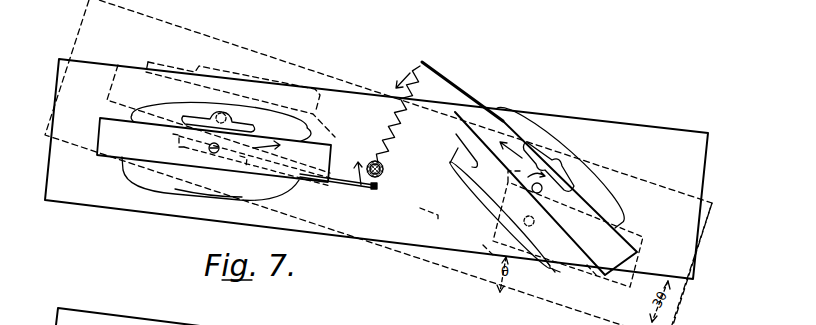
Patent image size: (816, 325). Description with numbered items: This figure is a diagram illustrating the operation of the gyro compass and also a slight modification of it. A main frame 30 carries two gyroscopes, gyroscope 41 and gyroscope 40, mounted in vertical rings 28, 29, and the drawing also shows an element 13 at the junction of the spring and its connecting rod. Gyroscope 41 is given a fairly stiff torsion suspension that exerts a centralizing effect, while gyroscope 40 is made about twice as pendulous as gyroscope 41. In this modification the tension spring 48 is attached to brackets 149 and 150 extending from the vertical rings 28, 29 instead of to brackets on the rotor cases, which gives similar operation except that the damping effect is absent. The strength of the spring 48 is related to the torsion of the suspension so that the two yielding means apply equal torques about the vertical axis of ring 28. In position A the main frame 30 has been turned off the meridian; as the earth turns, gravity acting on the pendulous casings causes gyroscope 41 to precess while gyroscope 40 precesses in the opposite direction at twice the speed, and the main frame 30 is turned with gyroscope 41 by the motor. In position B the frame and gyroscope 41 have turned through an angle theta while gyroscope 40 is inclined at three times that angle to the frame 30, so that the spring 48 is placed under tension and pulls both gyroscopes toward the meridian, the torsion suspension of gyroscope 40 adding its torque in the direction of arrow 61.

The main frame 30 is at (709, 146).
The vertical ring 29 is at (307, 180).
The gyroscope 41 is at (157, 175).
The bracket 149 is at (350, 188).
The roller 13 is at (382, 175).
The spring 48 is at (399, 126).
The bracket 150 is at (462, 100).
The vertical ring 28 is at (455, 113).
The gyroscope 40 is at (480, 200).
The arrow 61 is at (547, 178).
The position A is at (679, 307).
The position B is at (704, 172).